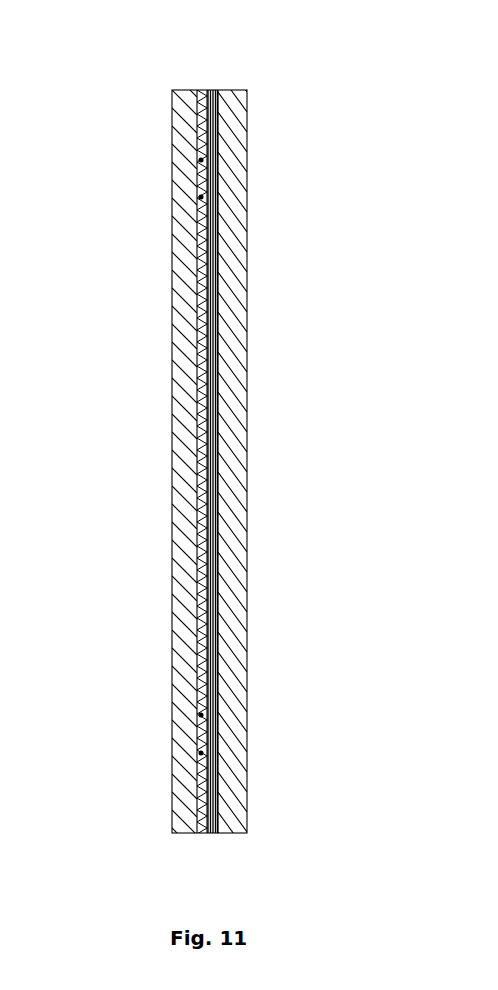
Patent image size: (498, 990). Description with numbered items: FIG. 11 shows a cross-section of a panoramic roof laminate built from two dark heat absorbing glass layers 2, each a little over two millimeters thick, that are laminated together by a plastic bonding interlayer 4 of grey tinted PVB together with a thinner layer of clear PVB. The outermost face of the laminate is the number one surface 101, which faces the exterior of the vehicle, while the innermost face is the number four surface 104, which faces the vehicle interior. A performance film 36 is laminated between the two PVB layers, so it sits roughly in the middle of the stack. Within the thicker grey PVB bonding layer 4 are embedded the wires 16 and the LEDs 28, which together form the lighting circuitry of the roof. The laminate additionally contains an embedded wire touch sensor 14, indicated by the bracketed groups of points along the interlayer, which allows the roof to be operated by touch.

The glass 2 is at (166, 428).
The plastic bonding interlayer 4 is at (193, 383).
The touch sensor 14 is at (194, 240).
The wire 16 is at (200, 346).
The LED 28 is at (199, 568).
The performance film 36 is at (226, 275).
The number one surface 101 is at (250, 335).
The number four surface 104 is at (166, 490).